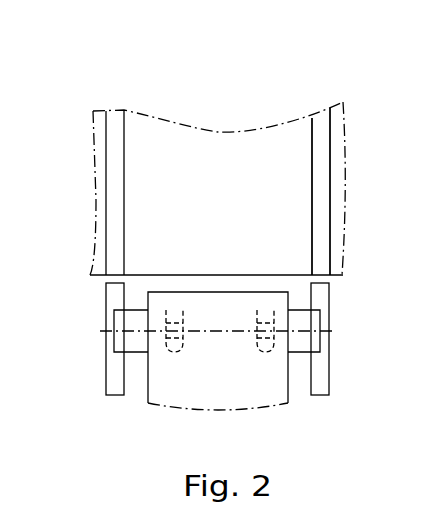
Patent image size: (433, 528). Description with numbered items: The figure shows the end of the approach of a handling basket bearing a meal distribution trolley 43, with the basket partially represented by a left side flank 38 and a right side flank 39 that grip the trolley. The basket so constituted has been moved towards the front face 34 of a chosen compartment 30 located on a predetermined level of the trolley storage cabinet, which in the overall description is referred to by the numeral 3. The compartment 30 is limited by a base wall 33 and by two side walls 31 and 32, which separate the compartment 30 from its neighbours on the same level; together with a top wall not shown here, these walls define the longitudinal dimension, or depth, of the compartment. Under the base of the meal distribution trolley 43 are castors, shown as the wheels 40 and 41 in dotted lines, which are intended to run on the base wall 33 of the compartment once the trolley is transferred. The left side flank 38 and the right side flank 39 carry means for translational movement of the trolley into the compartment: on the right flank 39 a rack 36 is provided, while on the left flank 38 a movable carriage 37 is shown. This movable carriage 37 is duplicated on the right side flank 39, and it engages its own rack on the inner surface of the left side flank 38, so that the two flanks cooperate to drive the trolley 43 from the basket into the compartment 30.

The apparatus 3 is at (428, 300).
The compartment 30 is at (296, 170).
The side wall 31 is at (124, 113).
The side wall 32 is at (308, 122).
The base wall 33 is at (233, 150).
The front face 34 is at (158, 276).
The rack 36 is at (322, 290).
The movable carriage 37 is at (137, 317).
The left side flank 38 is at (108, 381).
The right side flank 39 is at (321, 385).
The wheel 40 is at (168, 352).
The wheel 41 is at (260, 352).
The meal distribution trolley 43 is at (213, 407).